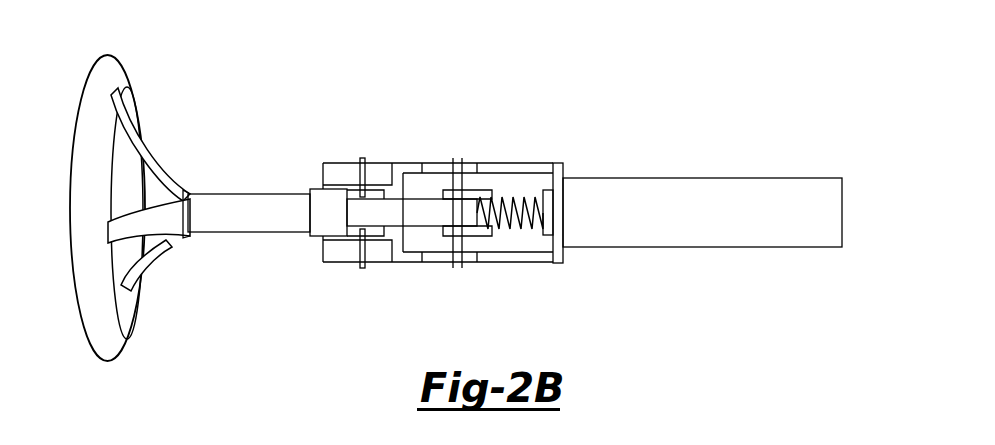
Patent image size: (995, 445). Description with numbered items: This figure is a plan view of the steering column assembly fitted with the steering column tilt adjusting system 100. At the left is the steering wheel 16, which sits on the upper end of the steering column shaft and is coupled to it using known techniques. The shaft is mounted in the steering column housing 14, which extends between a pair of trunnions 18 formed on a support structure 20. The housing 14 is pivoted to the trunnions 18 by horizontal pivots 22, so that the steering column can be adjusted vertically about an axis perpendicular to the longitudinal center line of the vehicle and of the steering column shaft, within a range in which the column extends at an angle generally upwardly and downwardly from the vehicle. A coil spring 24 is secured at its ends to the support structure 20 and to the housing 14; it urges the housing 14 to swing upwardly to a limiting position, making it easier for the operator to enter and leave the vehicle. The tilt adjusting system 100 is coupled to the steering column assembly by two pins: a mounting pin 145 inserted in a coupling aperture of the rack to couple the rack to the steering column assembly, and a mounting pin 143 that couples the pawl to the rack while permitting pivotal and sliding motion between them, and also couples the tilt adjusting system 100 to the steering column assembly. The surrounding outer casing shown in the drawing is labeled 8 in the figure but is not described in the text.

The steering wheel 16 is at (93, 80).
The steering column tilt adjusting system 100 is at (253, 129).
The housing 8 is at (391, 171).
The trunnions 18 is at (322, 167).
The steering column housing 14 is at (320, 230).
The mounting pin 145 is at (362, 265).
The horizontal pivots 22 is at (362, 158).
The mounting pin 143 is at (457, 265).
The support structure 20 is at (504, 190).
The coil spring 24 is at (536, 196).